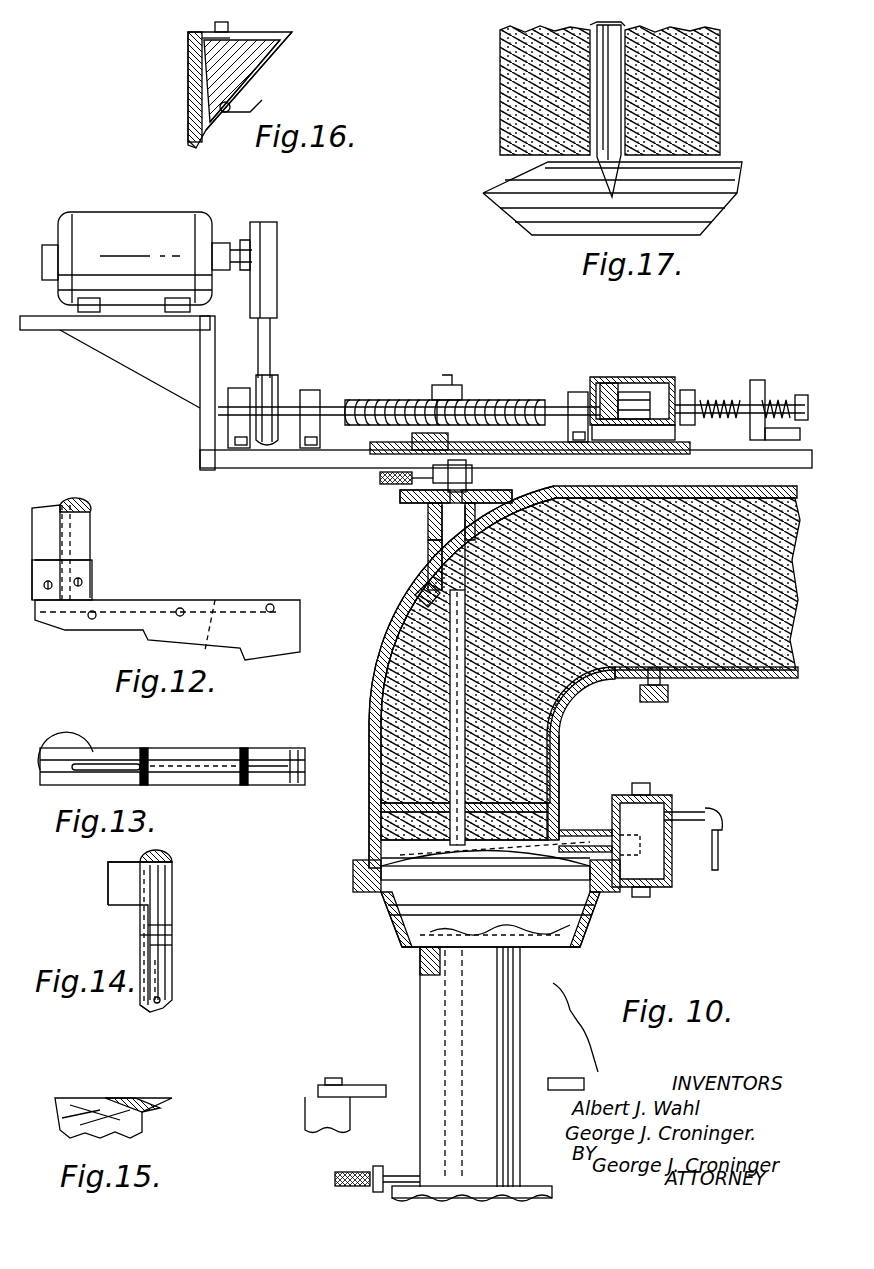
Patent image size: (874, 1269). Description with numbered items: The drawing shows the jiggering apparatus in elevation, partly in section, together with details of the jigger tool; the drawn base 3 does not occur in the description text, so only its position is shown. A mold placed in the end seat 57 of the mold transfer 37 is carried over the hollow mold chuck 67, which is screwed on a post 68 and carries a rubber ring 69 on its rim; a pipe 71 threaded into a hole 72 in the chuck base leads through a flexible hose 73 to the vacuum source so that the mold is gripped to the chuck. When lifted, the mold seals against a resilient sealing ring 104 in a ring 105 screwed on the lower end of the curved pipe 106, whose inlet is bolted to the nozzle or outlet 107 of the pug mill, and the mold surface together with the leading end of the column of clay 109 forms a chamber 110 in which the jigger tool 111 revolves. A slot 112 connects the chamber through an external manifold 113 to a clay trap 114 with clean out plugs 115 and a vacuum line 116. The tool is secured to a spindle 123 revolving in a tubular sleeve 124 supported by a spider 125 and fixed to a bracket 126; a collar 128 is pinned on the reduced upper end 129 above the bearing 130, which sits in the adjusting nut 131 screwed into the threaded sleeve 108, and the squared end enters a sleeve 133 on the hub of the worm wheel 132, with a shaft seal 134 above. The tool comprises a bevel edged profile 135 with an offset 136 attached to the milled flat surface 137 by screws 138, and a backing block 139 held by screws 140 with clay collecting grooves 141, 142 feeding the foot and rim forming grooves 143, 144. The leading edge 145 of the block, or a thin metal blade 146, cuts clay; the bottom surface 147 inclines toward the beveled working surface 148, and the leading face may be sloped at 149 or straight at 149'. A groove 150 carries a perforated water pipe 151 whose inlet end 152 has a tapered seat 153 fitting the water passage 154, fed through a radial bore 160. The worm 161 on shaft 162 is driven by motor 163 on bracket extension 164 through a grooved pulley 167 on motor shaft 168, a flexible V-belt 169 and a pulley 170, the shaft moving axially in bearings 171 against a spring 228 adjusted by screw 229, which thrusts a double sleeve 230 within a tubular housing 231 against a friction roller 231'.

In FIG. 17, the base / bowl bottom 3 is at (485, 200).
In FIG. 10, the base / bowl bottom 3 is at (400, 945).
In FIG. 10, the mold transfer 37 is at (305, 1110).
In FIG. 10, the end seat 57 is at (370, 1085).
In FIG. 10, the hollow mold chuck 67 is at (550, 922).
In FIG. 10, the post 68 is at (522, 985).
In FIG. 10, the rubber ring 69 is at (388, 915).
In FIG. 10, the pipe 71 is at (450, 1015).
In FIG. 10, the hole 72 is at (545, 936).
In FIG. 10, the flexible hose 73 is at (335, 1180).
In FIG. 10, the resilient sealing ring 104 is at (365, 888).
In FIG. 10, the ring 105 is at (355, 872).
In FIG. 10, the curved pipe 106 is at (370, 700).
In FIG. 10, the nozzle or outlet 107 is at (715, 488).
In FIG. 10, the threaded sleeve 108 is at (425, 512).
In FIG. 10, the column of clay 109 is at (383, 850).
In FIG. 10, the chamber 110 is at (383, 825).
In FIG. 10, the jigger tool 111 is at (560, 755).
In FIG. 10, the slot 112 is at (560, 800).
In FIG. 10, the external manifold 113 is at (575, 830).
In FIG. 10, the clay trap 114 is at (615, 800).
In FIG. 10, the clean out plugs 115 is at (660, 887).
In FIG. 10, the vacuum line 116 is at (700, 812).
In FIG. 17, the spindle 123 is at (600, 25).
In FIG. 12, the spindle 123 is at (92, 515).
In FIG. 13, the spindle 123 is at (55, 740).
In FIG. 14, the spindle 123 is at (172, 866).
In FIG. 10, the spindle 123 is at (405, 608).
In FIG. 10, the tubular sleeve 124 is at (400, 633).
In FIG. 10, the spider 125 is at (383, 805).
In FIG. 10, the bracket 126 is at (428, 545).
In FIG. 10, the collar 128 is at (472, 476).
In FIG. 10, the reduced upper end 129 is at (490, 452).
In FIG. 10, the bearing 130 is at (405, 497).
In FIG. 10, the adjusting nut 131 is at (405, 503).
In FIG. 10, the worm wheel 132 is at (475, 495).
In FIG. 10, the sleeve 133 is at (412, 440).
In FIG. 10, the shaft seal 134 is at (530, 495).
In FIG. 16, the bevel edged profile 135 is at (192, 68).
In FIG. 17, the bevel edged profile 135 is at (545, 165).
In FIG. 12, the bevel edged profile 135 is at (250, 598).
In FIG. 13, the bevel edged profile 135 is at (225, 752).
In FIG. 14, the bevel edged profile 135 is at (140, 950).
In FIG. 12, the offset 136 is at (92, 560).
In FIG. 12, the flat surface 137 is at (92, 588).
In FIG. 12, the screws 138 is at (92, 575).
In FIG. 14, the screws 138 is at (165, 912).
In FIG. 17, the backing block 139 is at (612, 165).
In FIG. 13, the backing block 139 is at (270, 790).
In FIG. 14, the backing block 139 is at (168, 935).
In FIG. 15, the backing block 139 is at (80, 1100).
In FIG. 12, the screws 140 is at (272, 606).
In FIG. 14, the screws 140 is at (165, 957).
In FIG. 13, the clay collecting groove 141 is at (145, 790).
In FIG. 13, the clay collecting groove 142 is at (244, 788).
In FIG. 13, the foot forming groove 143 is at (144, 750).
In FIG. 13, the rim forming groove 144 is at (260, 744).
In FIG. 16, the leading edge 145 is at (292, 34).
In FIG. 14, the leading edge 145 is at (172, 920).
In FIG. 15, the thin metal blade 146 is at (150, 1100).
In FIG. 14, the bottom surface 147 is at (168, 990).
In FIG. 16, the beveled working surface 148 is at (192, 146).
In FIG. 14, the beveled working surface 148 is at (142, 1005).
In FIG. 16, the leading face 149 is at (269, 81).
In FIG. 14, the leading face 149' is at (220, 943).
In FIG. 16, the groove 150 is at (245, 110).
In FIG. 16, the perforated water pipe 151 is at (225, 114).
In FIG. 12, the perforated water pipe 151 is at (212, 595).
In FIG. 13, the perforated water pipe 151 is at (225, 788).
In FIG. 16, the inlet end 152 is at (200, 42).
In FIG. 16, the tapered seat 153 is at (215, 26).
In FIG. 12, the water passage 154 is at (70, 505).
In FIG. 14, the water passage 154 is at (156, 856).
In FIG. 10, the water passage 154 is at (420, 588).
In FIG. 10, the radial bore 160 is at (380, 478).
In FIG. 10, the worm 161 is at (470, 390).
In FIG. 10, the shaft 162 is at (333, 405).
In FIG. 10, the motor 163 is at (142, 200).
In FIG. 10, the bracket extension 164 is at (45, 330).
In FIG. 10, the grooved pulley 167 is at (278, 230).
In FIG. 10, the motor shaft 168 is at (232, 248).
In FIG. 10, the flexible V-belt 169 is at (272, 300).
In FIG. 10, the pulley 170 is at (274, 378).
In FIG. 10, the bearings 171 is at (575, 392).
In FIG. 10, the spring 228 is at (690, 392).
In FIG. 10, the screw 229 is at (760, 395).
In FIG. 10, the double sleeve 230 is at (648, 378).
In FIG. 10, the tubular housing 231 is at (608, 368).
In FIG. 10, the friction roller 231' is at (633, 378).